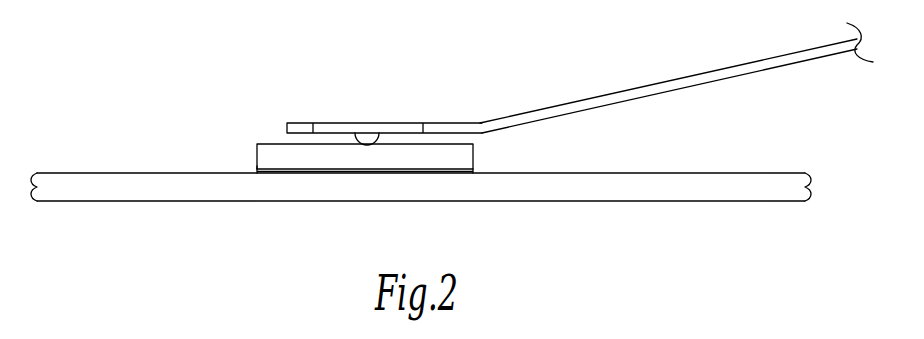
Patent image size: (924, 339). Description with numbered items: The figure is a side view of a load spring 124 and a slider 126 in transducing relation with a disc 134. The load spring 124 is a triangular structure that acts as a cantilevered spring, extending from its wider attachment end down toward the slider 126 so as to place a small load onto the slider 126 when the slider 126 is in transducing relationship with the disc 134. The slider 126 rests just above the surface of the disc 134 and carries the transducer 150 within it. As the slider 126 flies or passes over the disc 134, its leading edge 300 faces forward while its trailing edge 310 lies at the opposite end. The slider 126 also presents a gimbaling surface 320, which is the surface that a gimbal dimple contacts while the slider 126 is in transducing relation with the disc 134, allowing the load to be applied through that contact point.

The load spring 124 is at (740, 63).
The slider 126 is at (335, 159).
The disc 134 is at (670, 183).
The transducer 150 is at (258, 169).
The leading edge 300 is at (473, 155).
The trailing edge 310 is at (258, 156).
The gimbaling surface 320 is at (270, 143).